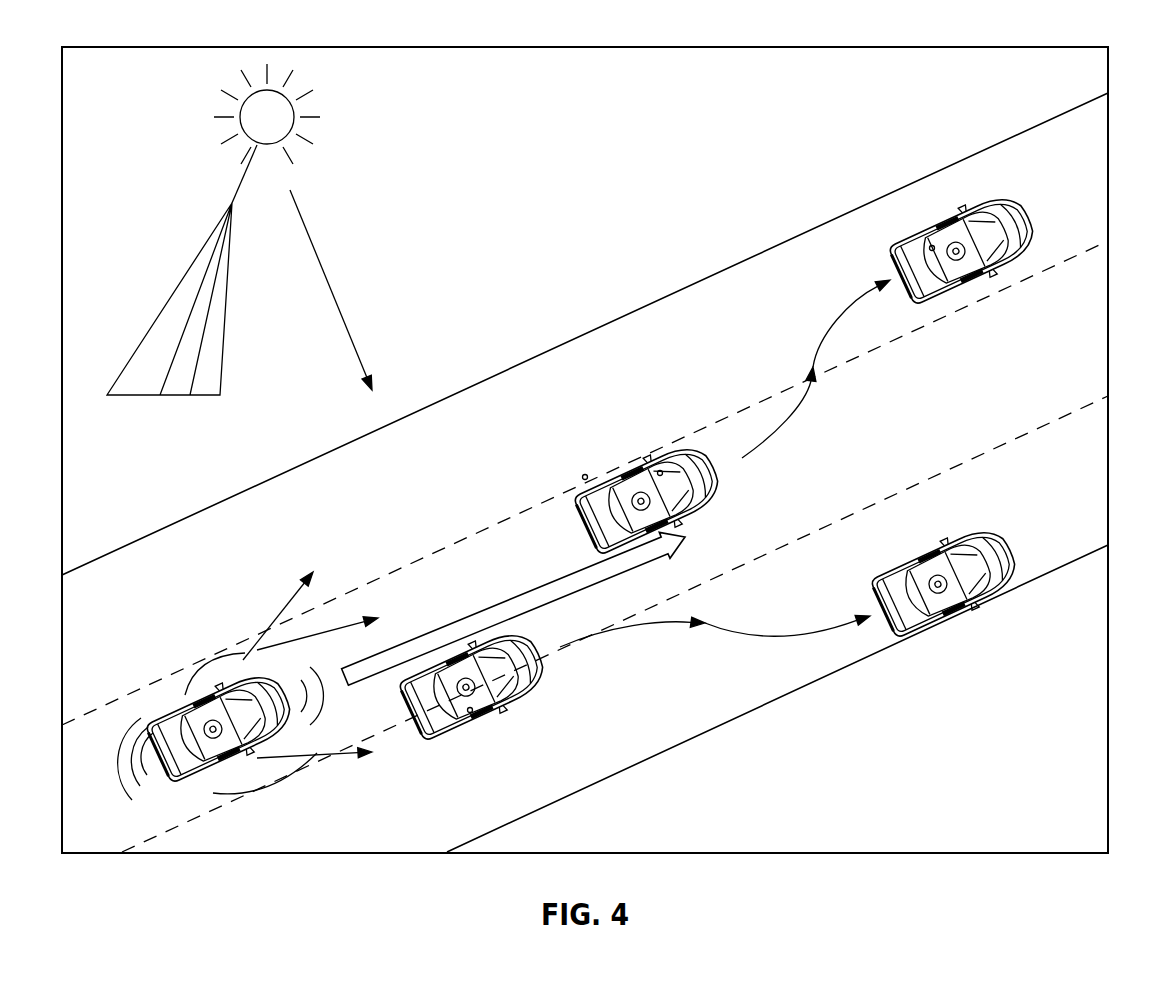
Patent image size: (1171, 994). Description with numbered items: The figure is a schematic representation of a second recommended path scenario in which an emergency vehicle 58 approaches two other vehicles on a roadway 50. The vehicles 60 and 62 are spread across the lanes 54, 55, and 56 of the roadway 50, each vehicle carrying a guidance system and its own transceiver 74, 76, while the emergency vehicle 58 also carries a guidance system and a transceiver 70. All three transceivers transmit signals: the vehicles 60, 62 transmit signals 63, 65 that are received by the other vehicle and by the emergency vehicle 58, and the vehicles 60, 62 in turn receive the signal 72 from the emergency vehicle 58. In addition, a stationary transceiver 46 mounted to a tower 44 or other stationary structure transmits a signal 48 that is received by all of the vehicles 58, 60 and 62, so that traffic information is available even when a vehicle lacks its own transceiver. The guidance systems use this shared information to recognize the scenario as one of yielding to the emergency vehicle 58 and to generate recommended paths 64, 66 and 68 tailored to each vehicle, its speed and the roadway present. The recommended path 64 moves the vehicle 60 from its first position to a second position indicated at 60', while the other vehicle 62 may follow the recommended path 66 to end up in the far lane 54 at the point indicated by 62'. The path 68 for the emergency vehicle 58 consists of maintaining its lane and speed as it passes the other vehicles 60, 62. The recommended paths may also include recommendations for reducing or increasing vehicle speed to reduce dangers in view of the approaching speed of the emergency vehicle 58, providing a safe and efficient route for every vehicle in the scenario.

The tower 44 is at (197, 252).
The stationary transceiver 46 is at (245, 170).
The signal 48 is at (333, 290).
The roadway 50 is at (567, 796).
The lane 54 is at (774, 289).
The lane 55 is at (1060, 325).
The lane 56 is at (720, 707).
The emergency vehicle 58 is at (233, 743).
The vehicle 60 is at (475, 696).
The second position of vehicle 60' is at (947, 598).
The vehicle 62 is at (650, 477).
The end point of vehicle 62' is at (965, 217).
The signal 63 is at (585, 477).
The recommended path 64 is at (777, 640).
The signal 65 is at (932, 248).
The recommended path 66 is at (807, 395).
The recommended path 68 is at (543, 586).
The transceiver 70 is at (220, 710).
The signal 72 is at (280, 613).
The transceiver 74 is at (470, 710).
The transceiver 76 is at (660, 473).